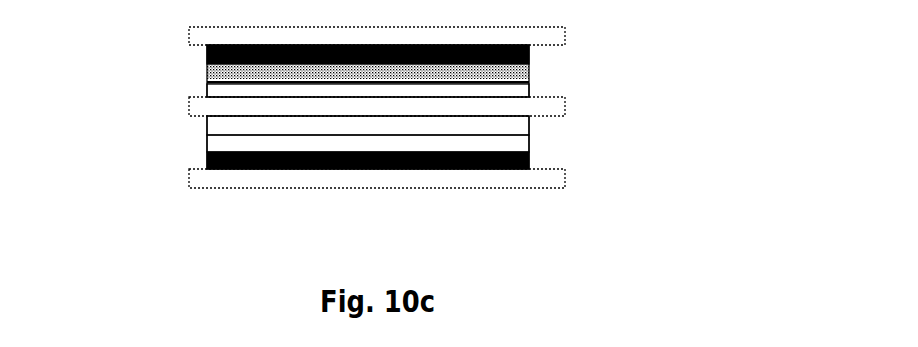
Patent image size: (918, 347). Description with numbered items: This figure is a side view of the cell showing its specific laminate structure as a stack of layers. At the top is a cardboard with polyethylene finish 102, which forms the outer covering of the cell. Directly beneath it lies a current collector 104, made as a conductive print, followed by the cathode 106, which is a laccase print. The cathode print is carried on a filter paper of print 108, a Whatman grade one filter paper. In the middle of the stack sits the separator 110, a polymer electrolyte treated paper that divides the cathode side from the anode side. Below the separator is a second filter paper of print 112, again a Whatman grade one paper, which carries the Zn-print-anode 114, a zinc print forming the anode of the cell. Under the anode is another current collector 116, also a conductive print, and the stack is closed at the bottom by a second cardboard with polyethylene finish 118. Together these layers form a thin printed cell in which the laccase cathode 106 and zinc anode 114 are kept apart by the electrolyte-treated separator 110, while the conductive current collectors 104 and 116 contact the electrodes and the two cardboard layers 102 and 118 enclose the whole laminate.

The cardboard with polyethylene finish 102 is at (549, 39).
The current collector 104 is at (530, 58).
The cathode 106 is at (530, 73).
The filter paper of print 108 is at (522, 88).
The separator 110 is at (198, 103).
The filter paper of print 112 is at (212, 124).
The Zn-print-anode 114 is at (218, 142).
The current collector 116 is at (210, 151).
The cardboard with polyethylene finish 118 is at (217, 180).